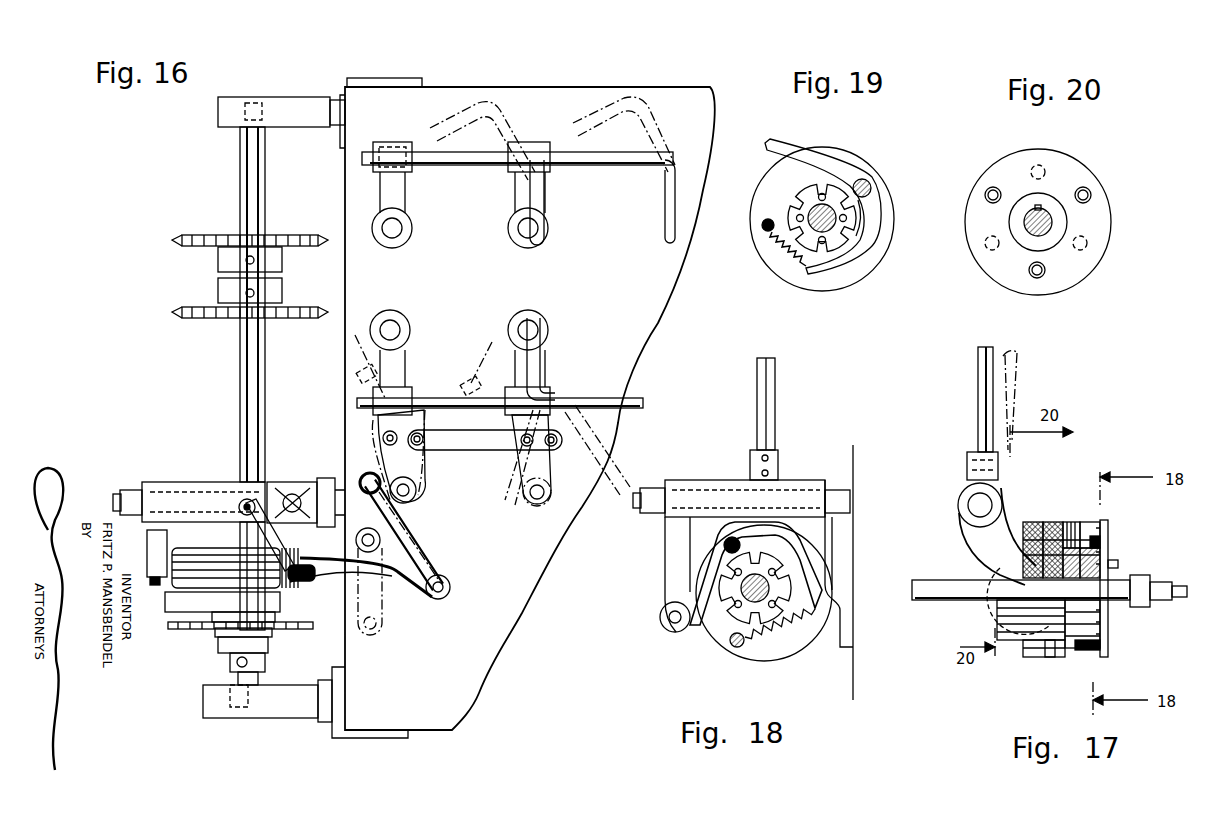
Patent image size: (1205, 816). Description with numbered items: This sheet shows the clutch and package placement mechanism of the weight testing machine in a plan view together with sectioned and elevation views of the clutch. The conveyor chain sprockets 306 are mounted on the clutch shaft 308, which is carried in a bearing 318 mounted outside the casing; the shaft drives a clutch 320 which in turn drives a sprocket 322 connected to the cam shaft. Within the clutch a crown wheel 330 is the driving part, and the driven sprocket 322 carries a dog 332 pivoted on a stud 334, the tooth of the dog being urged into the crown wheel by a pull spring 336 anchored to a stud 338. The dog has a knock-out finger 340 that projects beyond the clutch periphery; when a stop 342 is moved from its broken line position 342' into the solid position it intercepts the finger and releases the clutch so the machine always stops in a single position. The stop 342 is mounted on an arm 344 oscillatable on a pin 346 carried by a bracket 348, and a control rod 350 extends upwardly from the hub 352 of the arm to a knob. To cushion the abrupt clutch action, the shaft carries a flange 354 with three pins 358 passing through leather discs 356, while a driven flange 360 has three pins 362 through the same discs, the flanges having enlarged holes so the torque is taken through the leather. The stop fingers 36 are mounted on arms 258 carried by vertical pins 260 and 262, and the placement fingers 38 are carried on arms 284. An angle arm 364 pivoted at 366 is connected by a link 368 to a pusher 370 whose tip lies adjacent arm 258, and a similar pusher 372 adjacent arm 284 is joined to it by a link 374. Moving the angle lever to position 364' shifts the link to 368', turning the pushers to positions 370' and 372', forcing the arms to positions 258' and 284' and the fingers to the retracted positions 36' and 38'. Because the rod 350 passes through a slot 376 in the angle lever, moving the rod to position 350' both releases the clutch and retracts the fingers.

In FIG. 16, the stop fingers 36 is at (553, 280).
In FIG. 16, the spread or released position of the stop fingers 36' is at (487, 303).
In FIG. 16, the placement fingers 38 is at (516, 280).
In FIG. 16, the retracted position of the placement fingers 38' is at (633, 281).
In FIG. 16, the arms 258 is at (417, 278).
In FIG. 16, the broken line position of arms 258 258' is at (343, 366).
In FIG. 16, the vertical pin 260 is at (404, 229).
In FIG. 16, the vertical pin 262 is at (394, 330).
In FIG. 16, the arms 284 is at (533, 278).
In FIG. 16, the broken line position of arms 284 284' is at (482, 360).
In FIG. 16, the sprockets 306 is at (182, 241).
In FIG. 16, the clutch shaft 308 is at (242, 412).
In FIG. 20, the clutch shaft 308 is at (1045, 228).
In FIG. 17, the clutch shaft 308 is at (945, 603).
In FIG. 16, the bearing 318 is at (292, 98).
In FIG. 16, the clutch 320 is at (166, 612).
In FIG. 16, the sprocket 322 is at (192, 631).
In FIG. 17, the sprocket 322 is at (1109, 530).
In FIG. 19, the crown wheel 330 is at (790, 205).
In FIG. 18, the crown wheel 330 is at (722, 618).
In FIG. 17, the crown wheel 330 is at (1102, 566).
In FIG. 19, the dog 332 is at (862, 222).
In FIG. 18, the dog 332 is at (773, 547).
In FIG. 17, the dog 332 is at (1098, 536).
In FIG. 19, the stud 334 is at (868, 182).
In FIG. 18, the stud 334 is at (724, 548).
In FIG. 17, the stud 334 is at (1118, 562).
In FIG. 19, the pull spring 336 is at (784, 252).
In FIG. 18, the pull spring 336 is at (790, 632).
In FIG. 19, the stud 338 is at (762, 230).
In FIG. 18, the stud 338 is at (742, 647).
In FIG. 17, the stud 338 is at (1100, 648).
In FIG. 19, the knock-out finger 340 is at (790, 145).
In FIG. 18, the knock-out finger 340 is at (690, 598).
In FIG. 16, the stop 342 is at (205, 572).
In FIG. 18, the stop 342 is at (667, 632).
In FIG. 17, the stop 342 is at (1067, 665).
In FIG. 17, the broken line position of the stop 342' is at (1012, 628).
In FIG. 16, the arm 344 is at (150, 556).
In FIG. 18, the arm 344 is at (672, 545).
In FIG. 17, the arm 344 is at (986, 545).
In FIG. 16, the pin 346 is at (122, 492).
In FIG. 18, the pin 346 is at (648, 488).
In FIG. 17, the pin 346 is at (975, 503).
In FIG. 16, the bracket 348 is at (323, 478).
In FIG. 18, the bracket 348 is at (832, 536).
In FIG. 16, the control rod 350 is at (279, 535).
In FIG. 18, the control rod 350 is at (801, 419).
In FIG. 17, the control rod 350 is at (967, 413).
In FIG. 16, the broken line position of the control rod 350' is at (292, 489).
In FIG. 17, the broken line position of the control rod 350' is at (1040, 400).
In FIG. 16, the hub 352 is at (184, 484).
In FIG. 18, the hub 352 is at (716, 480).
In FIG. 20, the flange 354 is at (1108, 250).
In FIG. 17, the flange 354 is at (1050, 522).
In FIG. 17, the leather discs 356 is at (1074, 522).
In FIG. 20, the pins 358 is at (1043, 168).
In FIG. 17, the driven flange 360 is at (1090, 522).
In FIG. 20, the pins 362 is at (991, 187).
In FIG. 17, the pins 362 is at (1030, 522).
In FIG. 16, the angle arm 364 is at (370, 587).
In FIG. 16, the broken line position of angle lever 364 364' is at (363, 591).
In FIG. 16, the pivot 366 is at (408, 527).
In FIG. 16, the link 368 is at (420, 537).
In FIG. 16, the broken line position of link 368 368' is at (363, 478).
In FIG. 16, the pusher 370 is at (426, 456).
In FIG. 16, the broken line position of pusher 370 370' is at (390, 455).
In FIG. 16, the pusher 372 is at (553, 459).
In FIG. 16, the broken line position of pusher 372 372' is at (529, 502).
In FIG. 16, the link 374 is at (481, 452).
In FIG. 16, the slot 376 is at (308, 584).